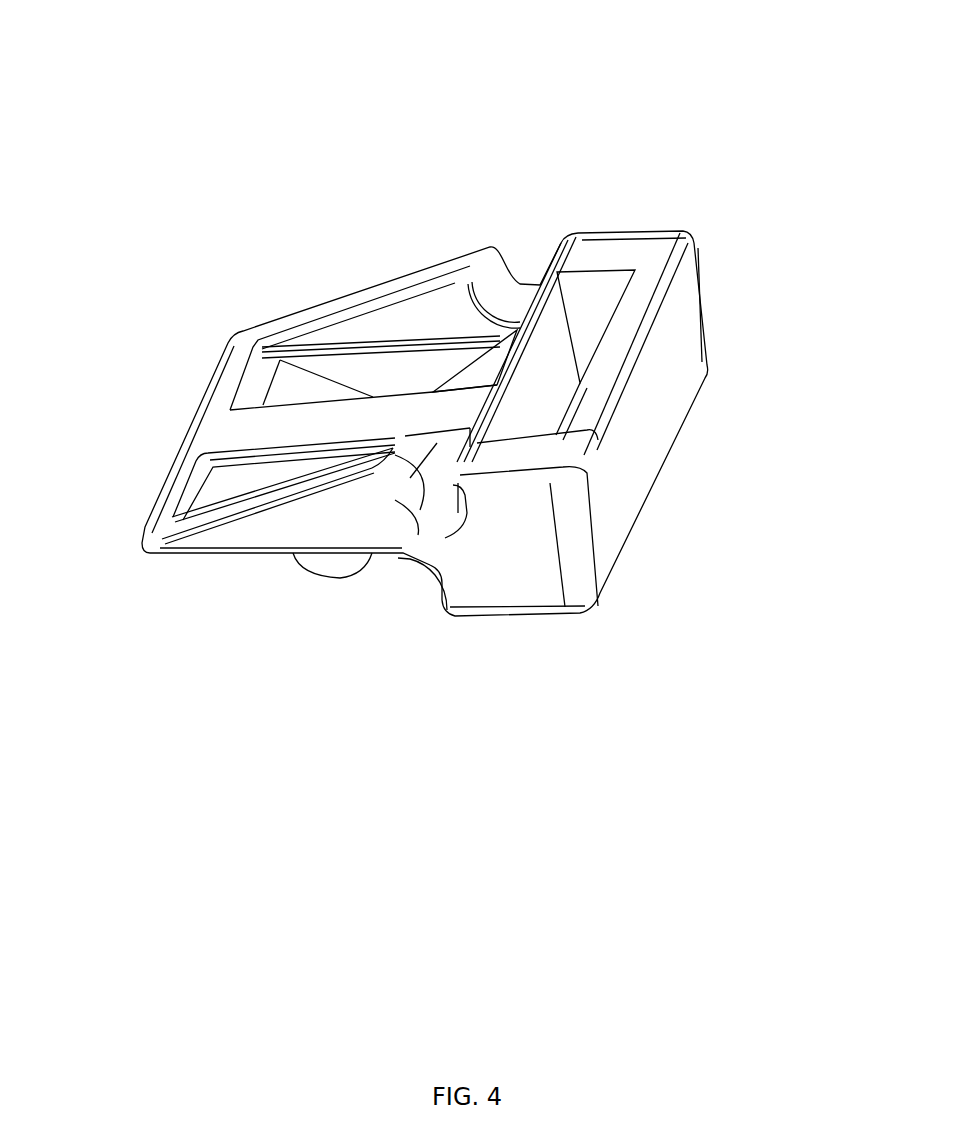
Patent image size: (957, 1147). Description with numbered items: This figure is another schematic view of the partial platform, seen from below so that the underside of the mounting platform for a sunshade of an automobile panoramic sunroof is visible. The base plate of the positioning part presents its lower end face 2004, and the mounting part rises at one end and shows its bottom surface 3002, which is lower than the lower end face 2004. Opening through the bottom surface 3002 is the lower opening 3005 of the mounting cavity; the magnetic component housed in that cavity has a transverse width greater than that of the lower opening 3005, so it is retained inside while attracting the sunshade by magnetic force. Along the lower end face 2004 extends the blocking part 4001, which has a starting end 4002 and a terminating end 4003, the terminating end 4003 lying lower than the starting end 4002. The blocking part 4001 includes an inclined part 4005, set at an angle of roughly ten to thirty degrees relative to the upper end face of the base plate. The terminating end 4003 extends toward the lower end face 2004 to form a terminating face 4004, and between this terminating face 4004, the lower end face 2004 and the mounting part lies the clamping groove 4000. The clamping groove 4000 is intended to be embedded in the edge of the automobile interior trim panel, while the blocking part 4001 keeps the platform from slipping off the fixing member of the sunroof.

The lower end face 2004 is at (220, 430).
The inclined part 4005 is at (258, 518).
The terminating end 4003 is at (165, 543).
The blocking part 4001 is at (318, 517).
The terminating face 4004 is at (400, 490).
The clamping groove 4000 is at (438, 514).
The bottom surface 3002 is at (527, 455).
The lower opening 3005 is at (605, 330).
The starting end 4002 is at (390, 479).